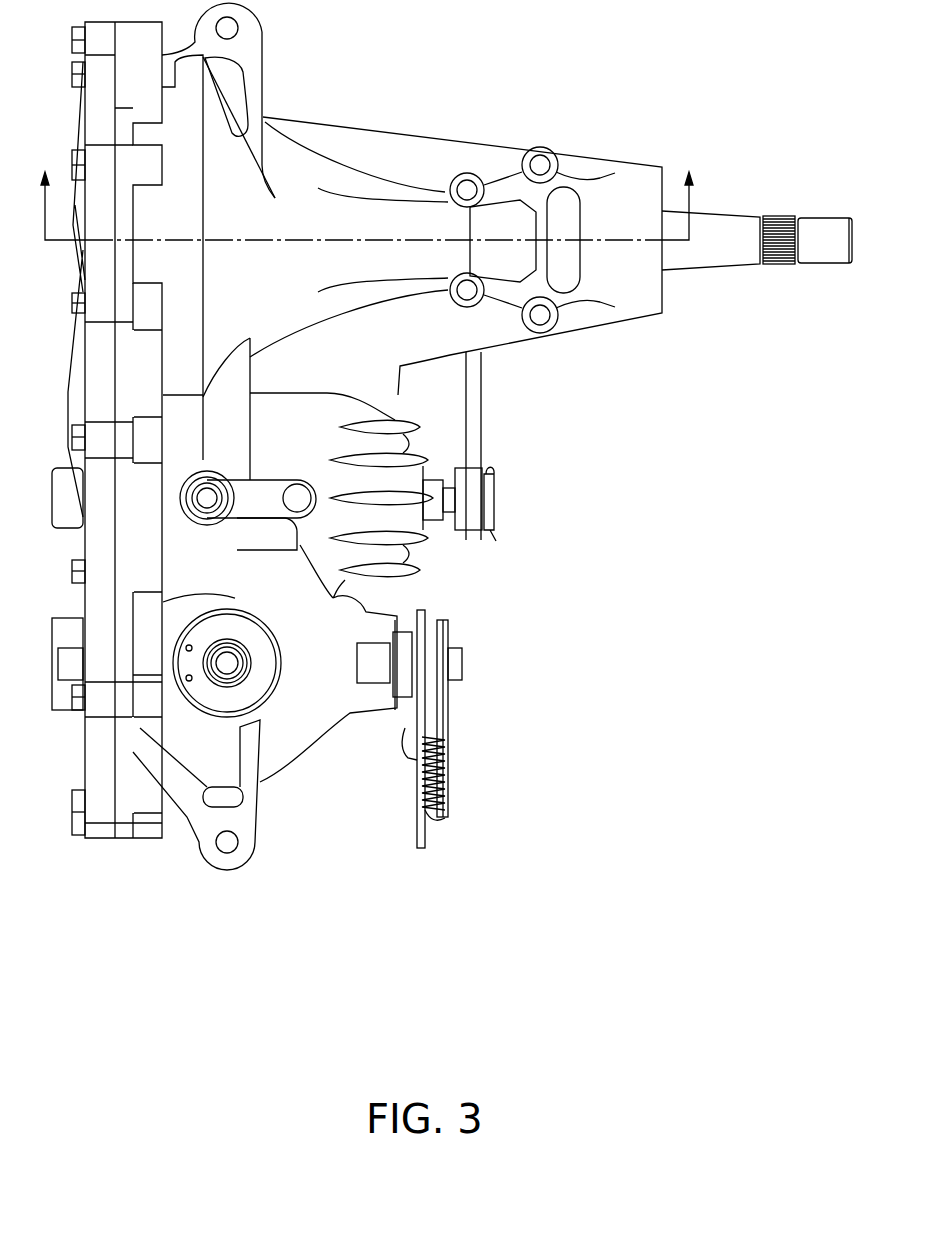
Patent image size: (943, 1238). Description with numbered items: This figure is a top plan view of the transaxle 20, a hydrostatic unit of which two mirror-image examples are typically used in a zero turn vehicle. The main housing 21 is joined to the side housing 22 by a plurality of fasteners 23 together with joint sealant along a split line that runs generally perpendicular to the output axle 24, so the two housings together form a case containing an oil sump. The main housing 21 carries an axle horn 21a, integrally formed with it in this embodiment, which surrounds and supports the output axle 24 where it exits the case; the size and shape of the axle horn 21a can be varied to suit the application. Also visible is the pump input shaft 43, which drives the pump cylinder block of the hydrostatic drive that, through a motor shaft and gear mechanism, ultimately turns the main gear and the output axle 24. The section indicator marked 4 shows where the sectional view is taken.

The transaxle 20 is at (660, 56).
The main housing 21 is at (326, 634).
The axle horn 21a is at (398, 130).
The side housing 22 is at (96, 126).
The fasteners 23 is at (72, 74).
The output axle 24 is at (736, 250).
The pump input shaft 43 is at (232, 664).
The section line 4- 4 is at (367, 191).